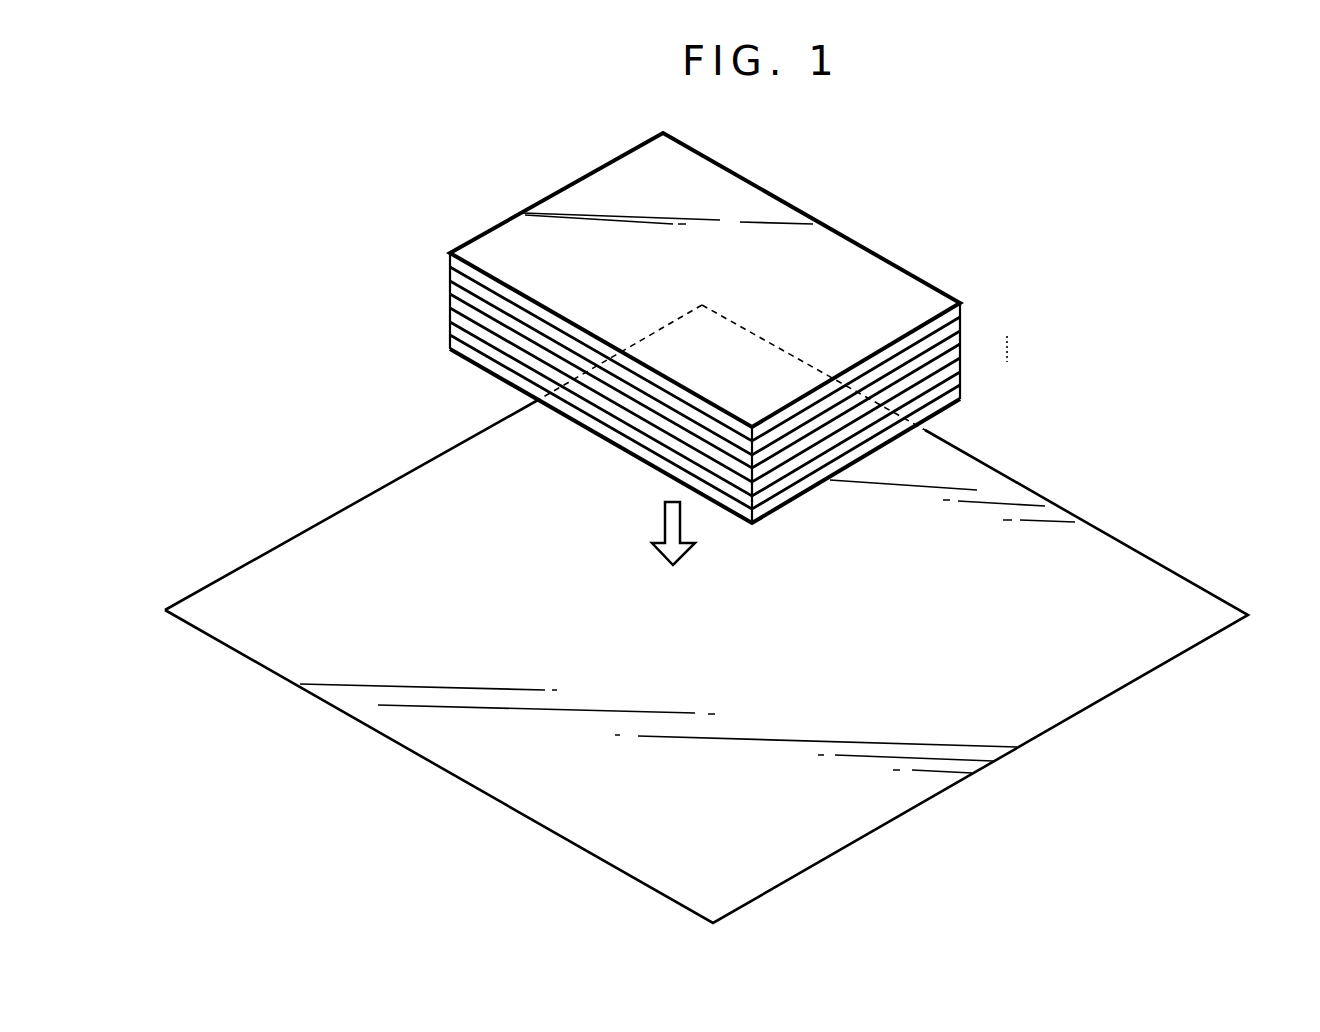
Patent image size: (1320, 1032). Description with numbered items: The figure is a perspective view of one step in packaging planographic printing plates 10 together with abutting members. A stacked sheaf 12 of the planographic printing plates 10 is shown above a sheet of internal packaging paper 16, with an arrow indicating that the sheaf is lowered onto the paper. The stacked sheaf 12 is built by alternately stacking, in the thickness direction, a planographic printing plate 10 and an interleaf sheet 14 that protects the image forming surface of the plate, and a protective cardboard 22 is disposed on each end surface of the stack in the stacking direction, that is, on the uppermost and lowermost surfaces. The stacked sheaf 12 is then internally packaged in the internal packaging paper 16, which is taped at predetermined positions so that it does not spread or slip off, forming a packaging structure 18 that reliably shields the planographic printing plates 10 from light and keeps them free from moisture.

The planographic printing plate 10 is at (963, 333).
The stacked sheaf 12 is at (877, 328).
The interleaf sheet 14 is at (963, 317).
The internal packaging paper 16 is at (1212, 576).
The packaging structure 18 is at (877, 328).
The protective cardboard 22 is at (963, 300).